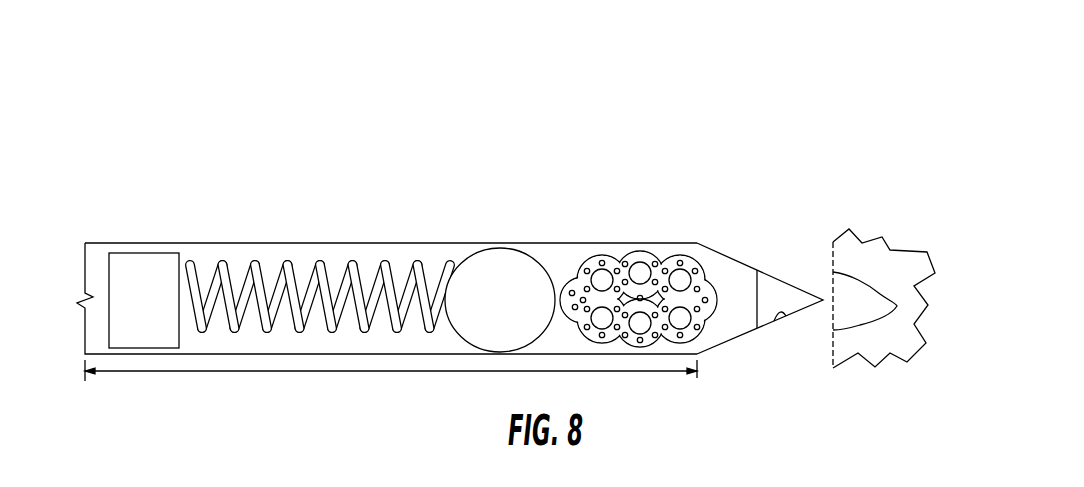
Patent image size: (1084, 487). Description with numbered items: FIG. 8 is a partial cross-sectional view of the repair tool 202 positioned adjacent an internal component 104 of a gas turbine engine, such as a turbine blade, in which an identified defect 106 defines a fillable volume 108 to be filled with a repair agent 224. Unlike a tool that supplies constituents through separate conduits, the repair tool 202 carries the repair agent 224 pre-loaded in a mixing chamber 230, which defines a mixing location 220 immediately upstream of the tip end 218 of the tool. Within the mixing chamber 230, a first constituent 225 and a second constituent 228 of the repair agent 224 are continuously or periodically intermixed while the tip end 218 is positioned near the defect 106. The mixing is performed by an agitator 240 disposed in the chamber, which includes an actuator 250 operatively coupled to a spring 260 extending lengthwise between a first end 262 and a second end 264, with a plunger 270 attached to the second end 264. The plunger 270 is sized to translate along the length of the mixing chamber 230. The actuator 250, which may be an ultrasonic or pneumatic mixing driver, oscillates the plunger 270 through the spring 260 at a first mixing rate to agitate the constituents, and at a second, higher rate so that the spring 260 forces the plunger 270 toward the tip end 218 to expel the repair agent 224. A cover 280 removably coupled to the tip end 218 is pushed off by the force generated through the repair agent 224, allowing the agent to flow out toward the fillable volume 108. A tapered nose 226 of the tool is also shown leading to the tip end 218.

The repair tool 202 is at (126, 68).
The mixing location 220 is at (282, 138).
The mixing chamber 230 is at (537, 242).
The agitator 240 is at (98, 270).
The actuator 250 is at (157, 313).
The spring 260 is at (334, 262).
The first end 262 is at (191, 270).
The second end 264 is at (450, 260).
The plunger 270 is at (517, 313).
The repair agent 224 is at (681, 248).
The first constituent 225 is at (640, 270).
The second constituent 228 is at (583, 268).
The tapered tip 226 is at (717, 333).
The tip end 218 is at (757, 287).
The cover 280 is at (783, 317).
The internal component 104 is at (915, 364).
The defect 106 is at (885, 273).
The fillable volume 108 is at (874, 313).